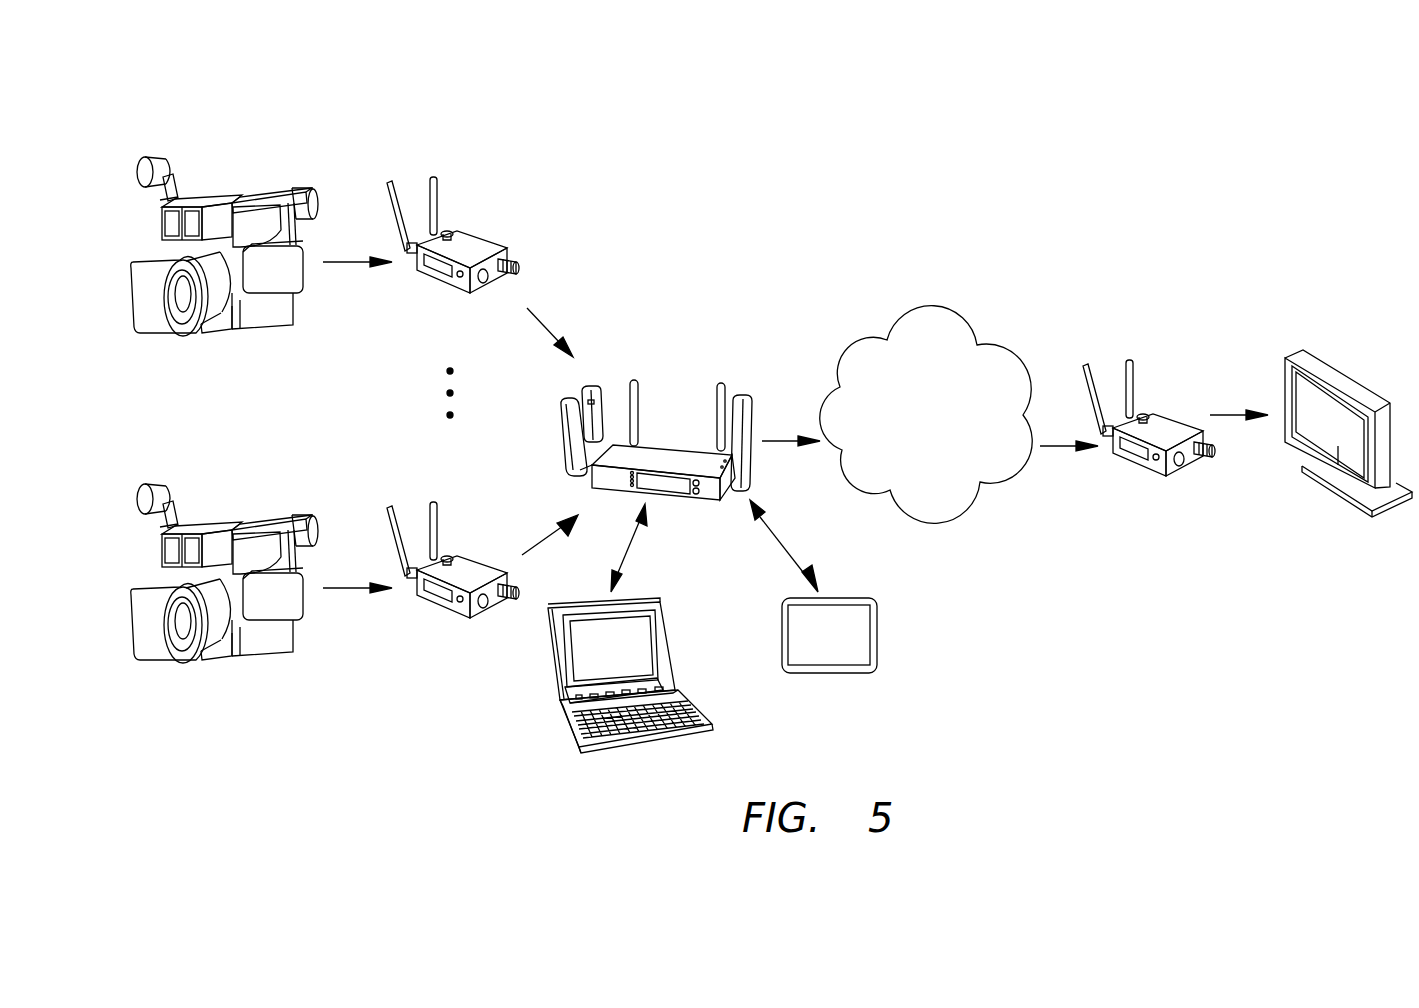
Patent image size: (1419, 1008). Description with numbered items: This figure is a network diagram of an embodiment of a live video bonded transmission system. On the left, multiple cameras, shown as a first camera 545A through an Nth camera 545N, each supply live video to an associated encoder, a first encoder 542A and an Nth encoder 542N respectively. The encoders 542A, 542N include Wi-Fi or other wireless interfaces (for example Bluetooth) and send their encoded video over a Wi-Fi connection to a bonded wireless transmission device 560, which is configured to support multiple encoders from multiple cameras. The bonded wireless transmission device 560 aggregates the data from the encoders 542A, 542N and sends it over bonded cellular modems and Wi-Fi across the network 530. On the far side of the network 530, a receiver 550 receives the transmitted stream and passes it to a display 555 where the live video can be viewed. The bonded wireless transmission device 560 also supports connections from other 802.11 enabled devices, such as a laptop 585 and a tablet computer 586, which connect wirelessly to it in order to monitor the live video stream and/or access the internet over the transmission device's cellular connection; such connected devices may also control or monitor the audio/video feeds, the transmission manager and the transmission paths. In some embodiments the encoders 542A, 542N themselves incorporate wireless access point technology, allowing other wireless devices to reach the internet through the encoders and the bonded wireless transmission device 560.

The camera 545A is at (218, 202).
The camera 545N is at (216, 529).
The encoder 542A is at (463, 242).
The encoder 542N is at (460, 570).
The bonded wireless transmission device 560 is at (660, 458).
The network 530 is at (915, 448).
The receiver 550 is at (1165, 428).
The display 555 is at (1320, 365).
The laptop 585 is at (563, 730).
The tablet computer 586 is at (830, 675).